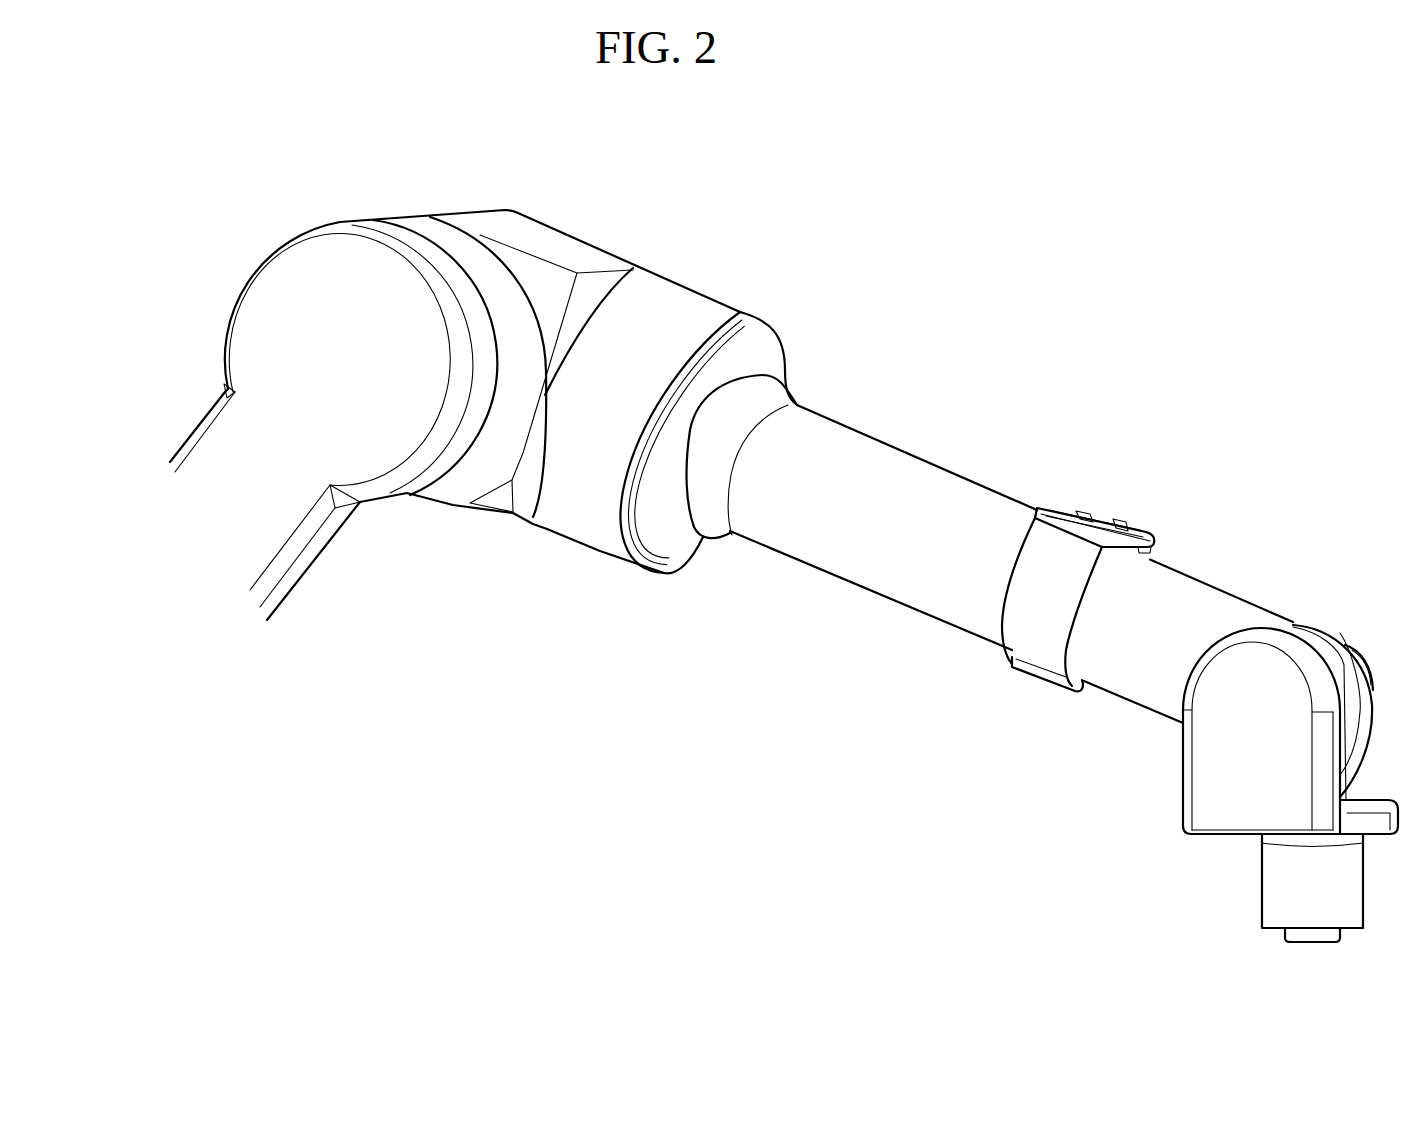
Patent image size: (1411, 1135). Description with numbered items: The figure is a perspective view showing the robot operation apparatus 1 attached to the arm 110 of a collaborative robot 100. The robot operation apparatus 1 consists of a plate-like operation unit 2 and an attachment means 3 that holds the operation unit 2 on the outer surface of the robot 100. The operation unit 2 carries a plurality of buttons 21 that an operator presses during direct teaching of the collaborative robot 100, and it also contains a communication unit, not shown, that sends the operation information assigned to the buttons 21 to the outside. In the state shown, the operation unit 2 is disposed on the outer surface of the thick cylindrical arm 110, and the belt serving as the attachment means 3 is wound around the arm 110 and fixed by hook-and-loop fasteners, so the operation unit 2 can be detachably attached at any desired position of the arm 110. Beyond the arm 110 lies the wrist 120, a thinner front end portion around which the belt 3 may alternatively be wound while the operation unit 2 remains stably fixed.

The collaborative robot 100 is at (833, 146).
The arm 110 is at (882, 470).
The wrist 120 is at (1257, 885).
The robot operation apparatus 1 is at (1137, 458).
The operation unit 2 is at (1093, 494).
The buttons 21 is at (1123, 527).
The attachment means 3 is at (1005, 629).